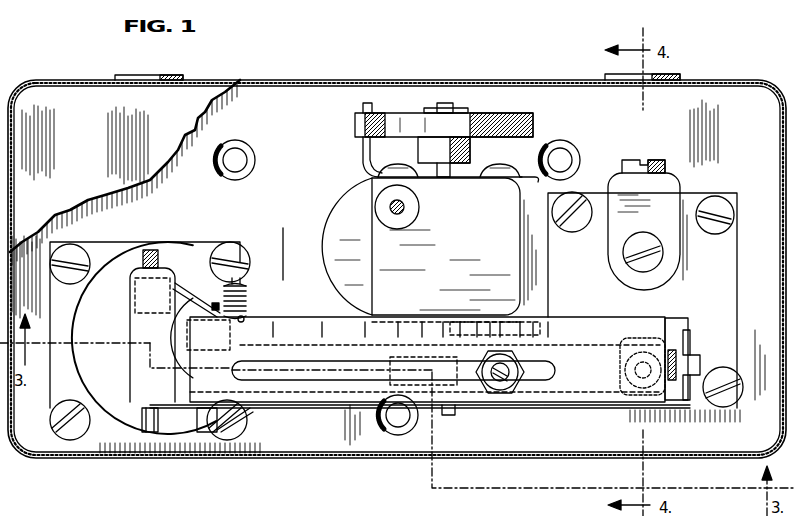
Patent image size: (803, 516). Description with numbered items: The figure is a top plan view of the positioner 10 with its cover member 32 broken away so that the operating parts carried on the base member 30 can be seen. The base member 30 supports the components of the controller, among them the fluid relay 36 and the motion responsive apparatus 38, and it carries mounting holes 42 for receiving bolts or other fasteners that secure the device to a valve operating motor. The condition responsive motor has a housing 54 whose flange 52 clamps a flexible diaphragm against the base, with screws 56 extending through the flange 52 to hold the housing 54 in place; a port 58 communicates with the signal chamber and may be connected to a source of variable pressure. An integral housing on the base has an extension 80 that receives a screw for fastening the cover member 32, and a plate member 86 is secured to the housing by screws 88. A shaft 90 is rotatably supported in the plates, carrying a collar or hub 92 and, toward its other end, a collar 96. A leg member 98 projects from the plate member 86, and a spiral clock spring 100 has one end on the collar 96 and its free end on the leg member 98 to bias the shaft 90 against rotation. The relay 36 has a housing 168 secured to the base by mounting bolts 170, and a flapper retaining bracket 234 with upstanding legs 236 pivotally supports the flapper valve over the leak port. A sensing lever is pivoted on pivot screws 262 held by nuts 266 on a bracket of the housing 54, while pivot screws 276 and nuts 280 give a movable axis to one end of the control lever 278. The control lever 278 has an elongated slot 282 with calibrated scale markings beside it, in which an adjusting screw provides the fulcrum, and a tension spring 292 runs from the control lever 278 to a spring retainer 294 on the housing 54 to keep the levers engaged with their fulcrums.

The positioner 10 is at (278, 72).
The base member 30 is at (258, 210).
The cover member 32 is at (204, 90).
The fluid relay 36 is at (693, 185).
The motion responsive apparatus 38 is at (350, 160).
The mounting hole 42 is at (237, 148).
The flange 52 is at (168, 242).
The housing 54 is at (73, 299).
The screws 56 is at (236, 254).
The port 58 is at (128, 72).
The extension 80 is at (413, 200).
The plate member 86 is at (522, 179).
The screws 88 is at (408, 171).
The shaft 90 is at (452, 104).
The collar or hub 92 is at (462, 321).
The collar 96 is at (470, 152).
The leg member 98 is at (362, 110).
The spiral clock spring 100 is at (506, 120).
The housing 168 is at (730, 268).
The mounting bolts 170 is at (580, 206).
The flapper retaining bracket 234 is at (672, 330).
The upstanding legs 236 is at (700, 352).
The pivot screws 262 is at (210, 428).
The nuts 266 is at (235, 418).
The pivot screws 276 is at (142, 262).
The control lever 278 is at (318, 317).
The nuts 280 is at (136, 276).
The elongated slot 282 is at (312, 362).
The tension spring 292 is at (243, 300).
The spring retainer 294 is at (245, 286).